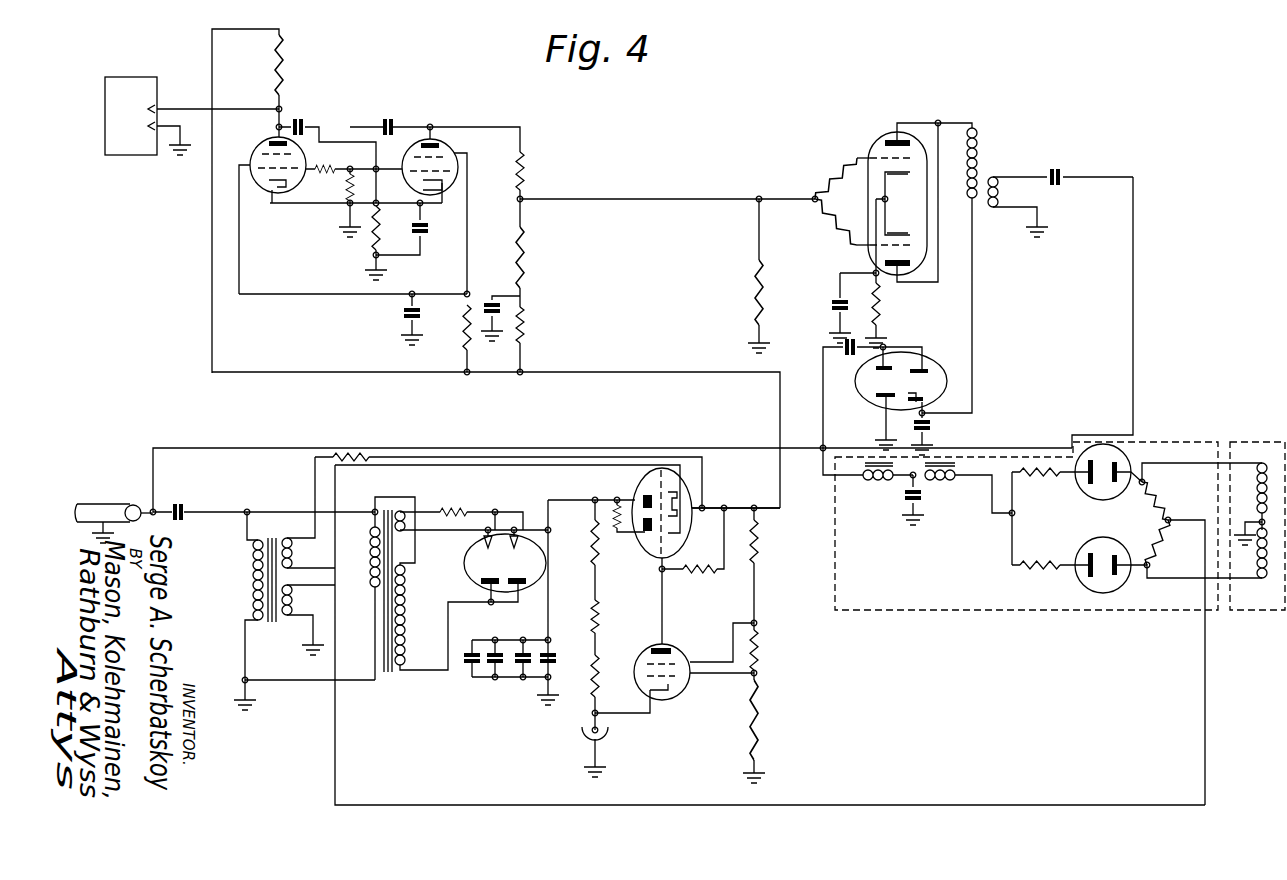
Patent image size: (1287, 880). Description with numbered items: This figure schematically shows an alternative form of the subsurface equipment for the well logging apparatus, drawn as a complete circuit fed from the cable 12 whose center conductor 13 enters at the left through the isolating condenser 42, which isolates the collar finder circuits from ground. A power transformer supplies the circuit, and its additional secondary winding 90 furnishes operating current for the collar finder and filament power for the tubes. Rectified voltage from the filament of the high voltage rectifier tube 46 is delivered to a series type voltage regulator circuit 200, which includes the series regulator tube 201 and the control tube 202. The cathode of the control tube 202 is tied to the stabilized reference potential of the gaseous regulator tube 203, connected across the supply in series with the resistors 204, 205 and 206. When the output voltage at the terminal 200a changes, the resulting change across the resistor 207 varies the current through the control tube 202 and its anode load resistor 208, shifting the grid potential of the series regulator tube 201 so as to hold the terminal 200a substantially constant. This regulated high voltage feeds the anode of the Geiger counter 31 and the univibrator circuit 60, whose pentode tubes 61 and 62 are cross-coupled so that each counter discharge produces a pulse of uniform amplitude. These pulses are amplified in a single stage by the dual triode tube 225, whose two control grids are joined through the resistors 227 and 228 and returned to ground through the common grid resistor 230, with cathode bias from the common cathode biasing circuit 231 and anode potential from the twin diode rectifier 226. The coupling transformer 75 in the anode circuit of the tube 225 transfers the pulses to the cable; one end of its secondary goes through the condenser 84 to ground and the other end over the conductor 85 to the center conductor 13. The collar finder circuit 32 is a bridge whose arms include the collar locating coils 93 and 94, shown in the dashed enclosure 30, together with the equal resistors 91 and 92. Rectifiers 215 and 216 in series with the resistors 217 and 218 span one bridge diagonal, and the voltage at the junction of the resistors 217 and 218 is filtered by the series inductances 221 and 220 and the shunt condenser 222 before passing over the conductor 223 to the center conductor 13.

The Geiger counter 31 is at (128, 77).
The univibrator circuit 60 is at (362, 148).
The pentode tube 61 is at (260, 142).
The pentode tube 62 is at (456, 158).
The dual triode tube 225 is at (875, 122).
The resistor 227 is at (835, 167).
The resistor 228 is at (837, 236).
The common grid resistor 230 is at (759, 298).
The common cathode biasing circuit 231 is at (836, 300).
The twin diode rectifier 226 is at (932, 352).
The coupling transformer 75 is at (1000, 239).
The condenser 84 is at (1060, 172).
The conductor 85 is at (1133, 334).
The collar finder circuit 32 is at (1151, 442).
The transformer unit 30 is at (1235, 442).
The cable 12 is at (106, 504).
The center conductor 13 is at (151, 510).
The isolating condenser 42 is at (184, 509).
The secondary winding 90 is at (291, 591).
The high voltage rectifier tube 46 is at (464, 550).
The series regulator tube 201 is at (634, 490).
The resistor 204 is at (596, 565).
The resistor 205 is at (596, 605).
The resistor 206 is at (596, 655).
The series type voltage regulator circuit 200 is at (654, 584).
The control tube 202 is at (671, 649).
The gaseous regulator tube 203 is at (608, 739).
The resistor 207 is at (755, 715).
The anode load resistor 208 is at (701, 558).
The conductor 223 is at (822, 479).
The output terminal 200a is at (755, 511).
The series inductance 221 is at (873, 488).
The shunt condenser 222 is at (889, 509).
The series inductance 220 is at (932, 478).
The resistor 217 is at (1048, 476).
The rectifier 215 is at (1091, 487).
The rectifier 216 is at (1082, 543).
The resistor 218 is at (1046, 575).
The resistor 91 is at (1152, 506).
The resistor 92 is at (1163, 545).
The collar locating coil 93 is at (1258, 502).
The collar locating coil 94 is at (1260, 566).